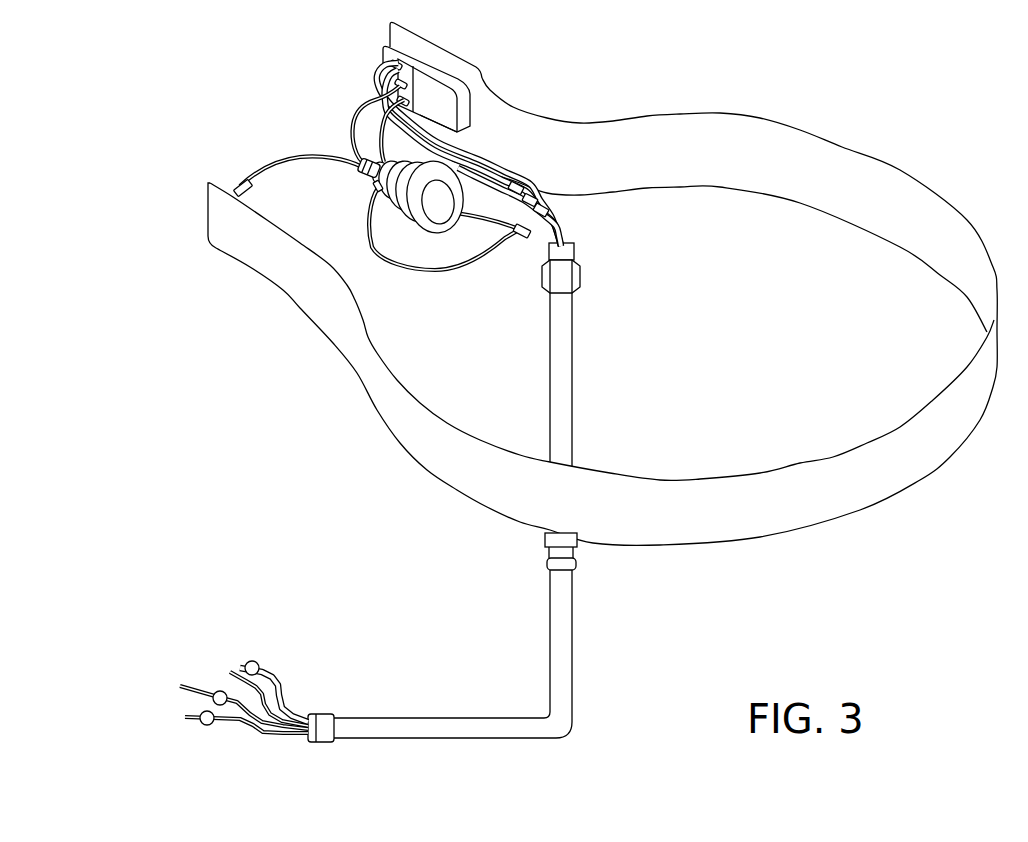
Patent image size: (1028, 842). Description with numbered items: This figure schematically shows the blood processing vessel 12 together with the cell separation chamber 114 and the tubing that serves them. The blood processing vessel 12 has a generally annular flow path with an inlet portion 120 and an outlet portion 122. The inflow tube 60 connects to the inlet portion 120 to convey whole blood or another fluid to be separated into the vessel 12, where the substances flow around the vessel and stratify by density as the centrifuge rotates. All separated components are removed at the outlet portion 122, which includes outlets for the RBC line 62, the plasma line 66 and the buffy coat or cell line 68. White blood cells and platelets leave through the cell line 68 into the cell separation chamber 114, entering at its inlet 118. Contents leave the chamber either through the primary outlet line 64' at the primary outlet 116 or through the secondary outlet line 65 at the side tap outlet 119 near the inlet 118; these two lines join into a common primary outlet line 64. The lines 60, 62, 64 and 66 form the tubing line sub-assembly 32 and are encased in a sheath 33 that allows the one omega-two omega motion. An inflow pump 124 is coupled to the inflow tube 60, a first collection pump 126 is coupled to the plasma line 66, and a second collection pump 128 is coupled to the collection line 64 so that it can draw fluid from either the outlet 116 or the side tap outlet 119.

The blood processing vessel 12 is at (838, 562).
The tubing line sub-assembly 32 is at (586, 654).
The sheath 33 is at (574, 700).
The inflow tube 60 is at (277, 173).
The RBC line 62 is at (565, 219).
The primary outlet line 64 is at (400, 392).
The primary outlet line 64' is at (514, 254).
The secondary outlet line 65 is at (476, 269).
The plasma line 66 is at (377, 127).
The cell line 68 is at (352, 138).
The cell separation chamber 114 is at (410, 224).
The primary outlet 116 is at (452, 216).
The inlet 118 is at (365, 170).
The side tap outlet 119 is at (374, 186).
The inlet portion 120 is at (298, 307).
The outlet portion 122 is at (478, 73).
The inflow pump 124 is at (203, 724).
The first collection pump 126 is at (214, 694).
The second collection pump 128 is at (258, 662).